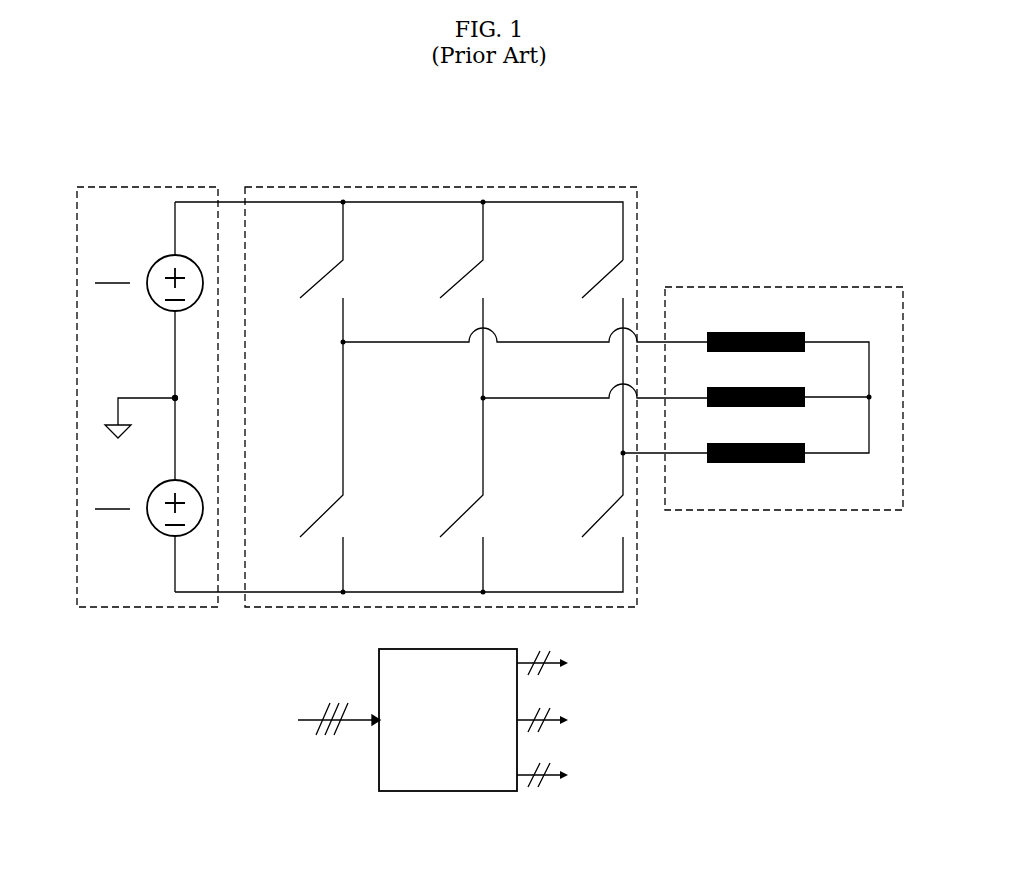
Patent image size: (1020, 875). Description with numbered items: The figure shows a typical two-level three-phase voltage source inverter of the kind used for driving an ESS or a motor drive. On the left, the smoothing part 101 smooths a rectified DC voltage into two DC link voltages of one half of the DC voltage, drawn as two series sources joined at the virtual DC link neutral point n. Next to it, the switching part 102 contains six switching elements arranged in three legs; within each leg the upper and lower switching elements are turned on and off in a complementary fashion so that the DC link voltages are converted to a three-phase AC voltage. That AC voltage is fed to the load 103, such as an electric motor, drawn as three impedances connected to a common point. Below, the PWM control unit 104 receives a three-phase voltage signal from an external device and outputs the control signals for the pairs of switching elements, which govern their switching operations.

The smoothing part 101 is at (97, 187).
The switching part 102 is at (288, 187).
The load 103 is at (772, 287).
The PWM control unit 104 is at (395, 649).